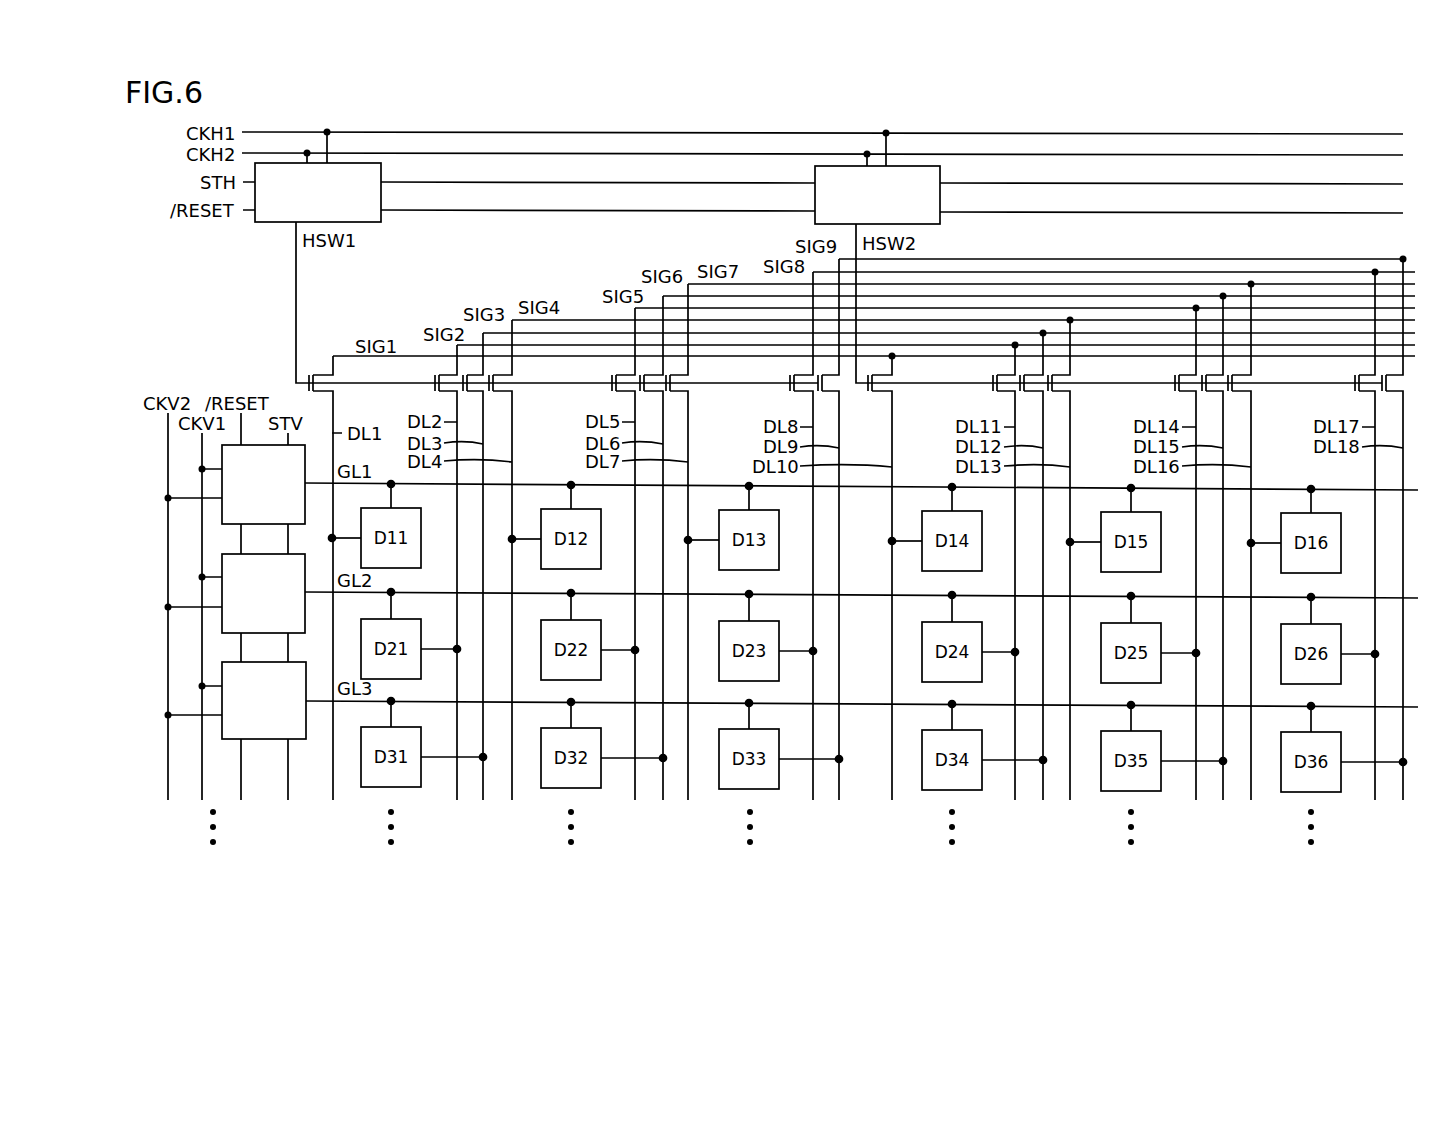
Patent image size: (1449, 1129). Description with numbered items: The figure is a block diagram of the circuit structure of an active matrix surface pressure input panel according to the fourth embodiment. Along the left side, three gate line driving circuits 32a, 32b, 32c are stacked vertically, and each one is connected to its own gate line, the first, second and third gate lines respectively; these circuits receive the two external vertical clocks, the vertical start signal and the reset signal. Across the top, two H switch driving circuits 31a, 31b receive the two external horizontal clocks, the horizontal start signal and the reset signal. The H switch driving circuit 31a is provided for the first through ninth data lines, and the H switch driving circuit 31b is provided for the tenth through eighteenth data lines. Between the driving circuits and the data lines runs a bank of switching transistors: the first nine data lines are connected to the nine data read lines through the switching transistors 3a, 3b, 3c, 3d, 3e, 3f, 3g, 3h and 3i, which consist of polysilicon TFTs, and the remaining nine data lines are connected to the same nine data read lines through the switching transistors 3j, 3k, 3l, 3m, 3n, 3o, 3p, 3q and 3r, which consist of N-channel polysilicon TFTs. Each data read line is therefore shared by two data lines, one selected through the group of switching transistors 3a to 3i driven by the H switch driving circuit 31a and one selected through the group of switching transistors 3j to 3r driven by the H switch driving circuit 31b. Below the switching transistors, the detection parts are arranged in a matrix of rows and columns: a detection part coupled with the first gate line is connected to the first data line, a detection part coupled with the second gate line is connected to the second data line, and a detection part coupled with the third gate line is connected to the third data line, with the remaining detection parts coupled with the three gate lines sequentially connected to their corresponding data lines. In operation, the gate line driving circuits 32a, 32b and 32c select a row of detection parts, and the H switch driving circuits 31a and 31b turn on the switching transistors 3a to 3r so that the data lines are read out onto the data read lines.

The switching transistor 3a is at (311, 373).
The switching transistor 3b is at (433, 390).
The switching transistor 3c is at (462, 371).
The switching transistor 3d is at (497, 397).
The switching transistor 3e is at (611, 391).
The switching transistor 3f is at (639, 371).
The switching transistor 3g is at (674, 397).
The switching transistor 3h is at (789, 391).
The switching transistor 3i is at (817, 371).
The switching transistor 3j is at (867, 392).
The switching transistor 3k is at (992, 391).
The switching transistor 3l is at (1019, 371).
The switching transistor 3m is at (1072, 397).
The switching transistor 3n is at (1173, 391).
The switching transistor 3o is at (1201, 371).
The switching transistor 3p is at (1238, 397).
The switching transistor 3q is at (1353, 391).
The switching transistor 3r is at (1381, 371).
The H switch driving circuit 31a is at (381, 222).
The H switch driving circuit 31b is at (940, 224).
The gate line driving circuit 32a is at (222, 513).
The gate line driving circuit 32b is at (222, 622).
The gate line driving circuit 32c is at (222, 728).